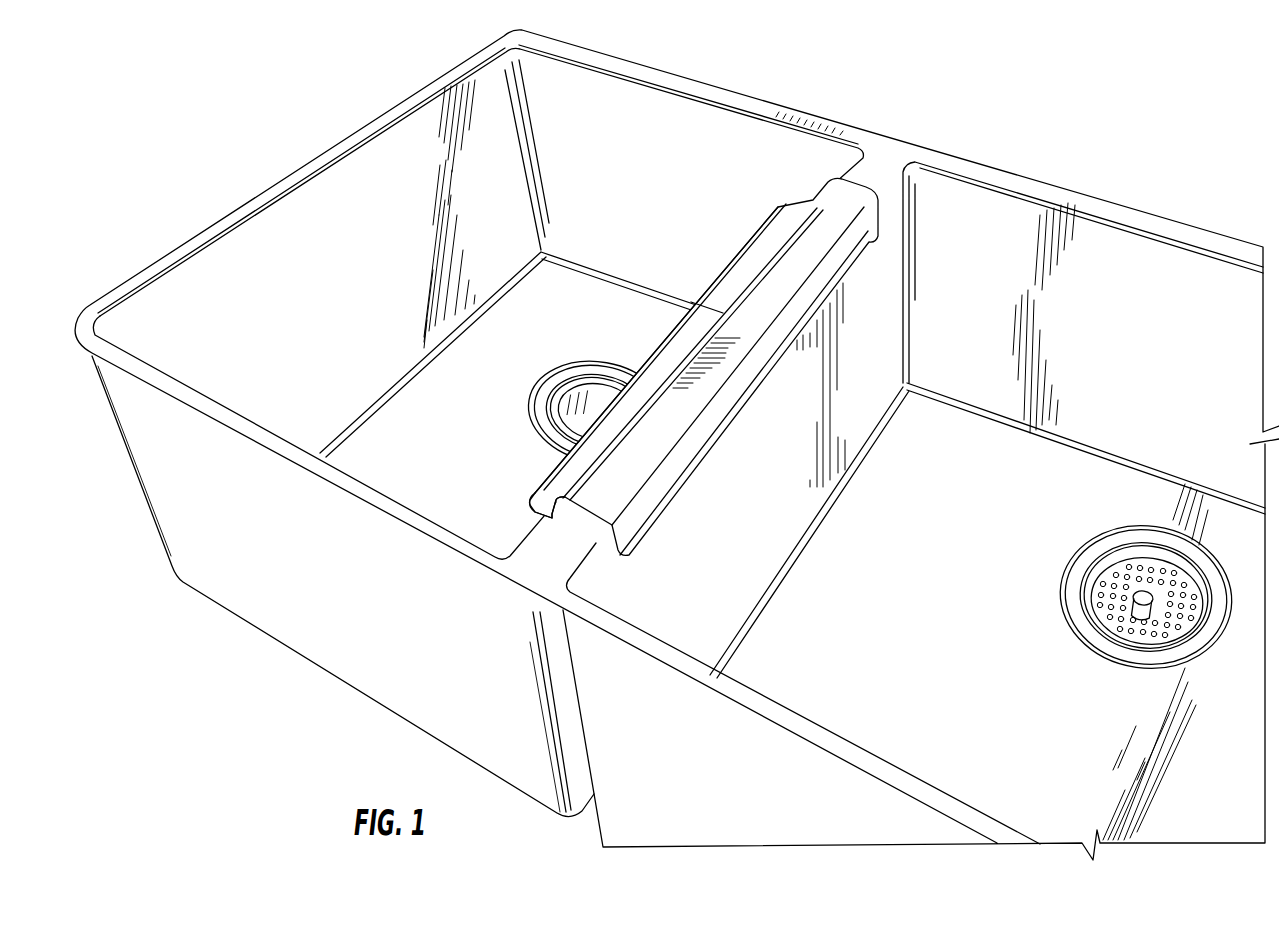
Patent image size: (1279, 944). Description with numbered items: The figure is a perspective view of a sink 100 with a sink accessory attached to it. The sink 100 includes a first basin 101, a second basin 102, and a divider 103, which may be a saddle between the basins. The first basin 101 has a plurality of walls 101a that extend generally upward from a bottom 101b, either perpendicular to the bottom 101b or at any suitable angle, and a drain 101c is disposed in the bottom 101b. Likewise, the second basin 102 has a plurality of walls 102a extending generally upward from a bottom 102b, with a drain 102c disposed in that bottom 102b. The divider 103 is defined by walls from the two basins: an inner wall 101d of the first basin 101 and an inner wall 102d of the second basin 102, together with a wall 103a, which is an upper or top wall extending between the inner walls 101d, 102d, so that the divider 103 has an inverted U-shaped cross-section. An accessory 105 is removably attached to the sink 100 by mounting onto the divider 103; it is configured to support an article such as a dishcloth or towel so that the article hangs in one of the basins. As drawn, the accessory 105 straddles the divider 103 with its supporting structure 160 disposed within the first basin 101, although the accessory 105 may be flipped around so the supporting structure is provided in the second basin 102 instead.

The sink 100 is at (362, 548).
The first basin 101 is at (630, 125).
The walls 101a is at (352, 297).
The bottom 101b is at (395, 453).
The drain 101c is at (584, 378).
The inner wall 101d is at (513, 541).
The second basin 102 is at (1102, 262).
The walls 102a is at (1075, 363).
The bottom 102b is at (908, 607).
The drain 102c is at (1106, 530).
The inner wall 102d is at (665, 597).
The divider 103 is at (550, 565).
The wall 103a is at (817, 230).
The accessory 105 is at (524, 484).
The supporting structure 160 is at (763, 232).